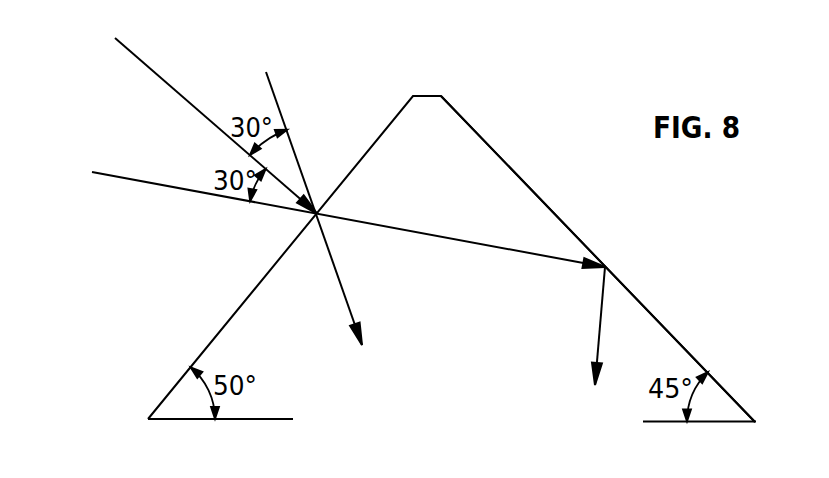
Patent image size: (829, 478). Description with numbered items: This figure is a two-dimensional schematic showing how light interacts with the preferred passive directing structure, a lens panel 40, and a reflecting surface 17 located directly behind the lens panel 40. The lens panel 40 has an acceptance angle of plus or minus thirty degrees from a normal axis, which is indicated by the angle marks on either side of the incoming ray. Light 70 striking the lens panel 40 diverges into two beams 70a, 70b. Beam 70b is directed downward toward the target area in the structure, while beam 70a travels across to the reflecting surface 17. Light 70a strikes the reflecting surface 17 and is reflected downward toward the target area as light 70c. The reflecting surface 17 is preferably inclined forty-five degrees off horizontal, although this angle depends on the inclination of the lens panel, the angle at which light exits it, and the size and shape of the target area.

The lens panel 40 is at (392, 121).
The reflecting surface 17 is at (523, 179).
The light 70 is at (148, 66).
The beam 70a is at (415, 217).
The beam 70b is at (347, 269).
The light 70c is at (600, 322).